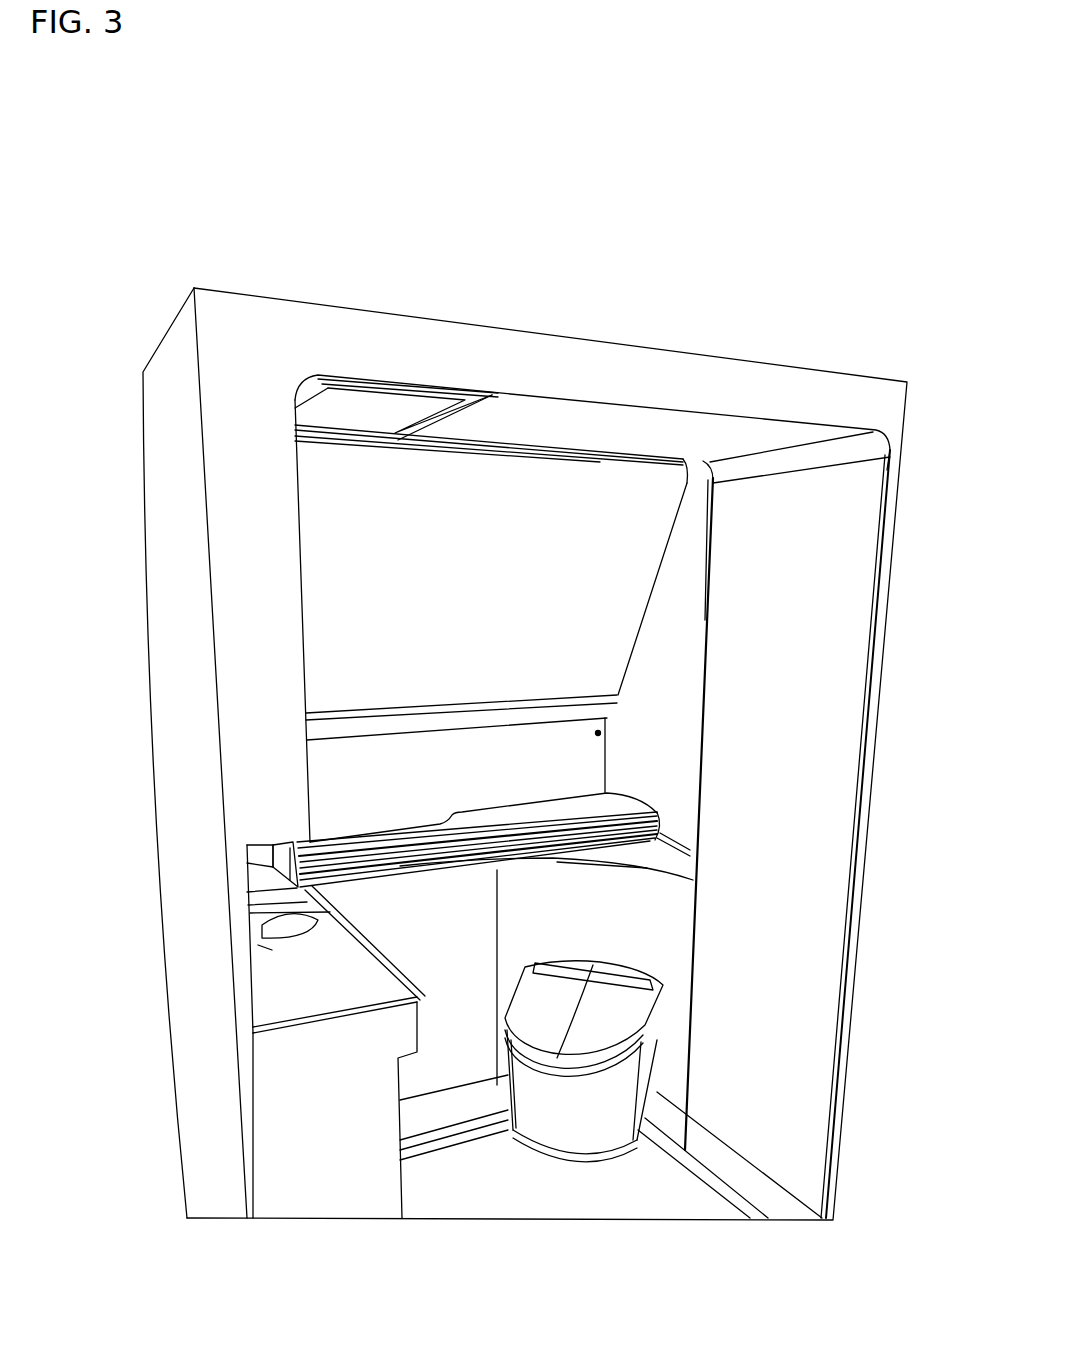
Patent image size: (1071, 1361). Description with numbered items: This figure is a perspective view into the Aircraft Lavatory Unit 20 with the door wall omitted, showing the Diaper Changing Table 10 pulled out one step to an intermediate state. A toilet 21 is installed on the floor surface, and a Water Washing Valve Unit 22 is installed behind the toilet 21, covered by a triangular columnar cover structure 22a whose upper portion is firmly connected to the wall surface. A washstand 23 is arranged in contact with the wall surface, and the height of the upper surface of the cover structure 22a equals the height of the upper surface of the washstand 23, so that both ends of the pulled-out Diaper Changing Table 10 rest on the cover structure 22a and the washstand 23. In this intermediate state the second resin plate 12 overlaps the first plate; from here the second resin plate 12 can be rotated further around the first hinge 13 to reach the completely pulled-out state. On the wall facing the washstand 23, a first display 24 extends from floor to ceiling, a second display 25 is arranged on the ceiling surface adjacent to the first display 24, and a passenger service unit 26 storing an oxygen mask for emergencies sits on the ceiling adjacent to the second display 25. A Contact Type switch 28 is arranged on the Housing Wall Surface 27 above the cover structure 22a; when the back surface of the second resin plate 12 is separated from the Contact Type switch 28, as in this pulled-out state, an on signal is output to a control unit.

The Aircraft Lavatory Unit 20 is at (439, 306).
The toilet 21 is at (590, 1140).
The Water Washing Valve Unit 22 is at (635, 942).
The cover structure 22a is at (667, 862).
The washstand 23 is at (320, 1175).
The first display 24 is at (782, 683).
The second display 25 is at (607, 428).
The passenger service unit 26 is at (347, 407).
The Housing Wall Surface 27 is at (345, 773).
The Contact Type switch 28 is at (601, 733).
The Diaper Changing Table 10 is at (328, 838).
The second resin plate 12 is at (600, 812).
The first hinge 13 is at (275, 877).